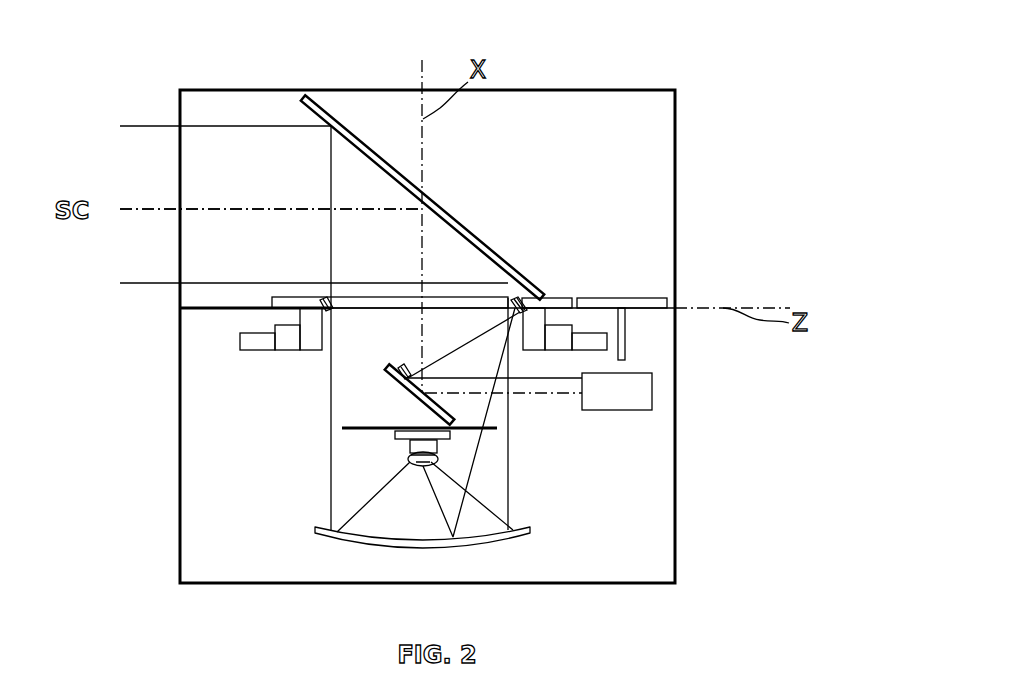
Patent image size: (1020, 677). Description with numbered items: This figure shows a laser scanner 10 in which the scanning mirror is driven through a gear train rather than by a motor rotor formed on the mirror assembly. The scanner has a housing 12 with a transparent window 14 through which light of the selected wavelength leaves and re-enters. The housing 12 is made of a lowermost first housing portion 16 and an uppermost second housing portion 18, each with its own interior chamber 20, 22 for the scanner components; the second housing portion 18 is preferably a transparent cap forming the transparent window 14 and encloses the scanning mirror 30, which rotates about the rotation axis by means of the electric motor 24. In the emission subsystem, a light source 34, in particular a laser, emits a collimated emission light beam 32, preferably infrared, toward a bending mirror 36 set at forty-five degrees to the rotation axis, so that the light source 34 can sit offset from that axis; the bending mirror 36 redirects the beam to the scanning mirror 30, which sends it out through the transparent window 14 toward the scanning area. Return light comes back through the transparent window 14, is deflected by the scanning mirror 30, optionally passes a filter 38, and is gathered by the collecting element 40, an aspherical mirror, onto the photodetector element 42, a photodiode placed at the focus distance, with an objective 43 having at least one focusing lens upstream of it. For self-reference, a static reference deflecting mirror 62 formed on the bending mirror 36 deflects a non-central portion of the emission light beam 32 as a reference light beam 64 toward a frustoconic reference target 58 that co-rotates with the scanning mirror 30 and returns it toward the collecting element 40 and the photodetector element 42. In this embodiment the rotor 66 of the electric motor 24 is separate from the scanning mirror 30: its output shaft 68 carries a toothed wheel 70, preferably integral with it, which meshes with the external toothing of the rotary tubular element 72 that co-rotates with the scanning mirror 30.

The laser scanner 10 is at (151, 79).
The housing 12 is at (704, 277).
The transparent window 14 is at (676, 157).
The first housing portion 16 is at (676, 483).
The second housing portion 18 is at (608, 85).
The interior chamber 20 is at (660, 560).
The interior chamber 22 is at (660, 125).
The electric motor 24 is at (659, 362).
The scanning mirror 30 is at (470, 222).
The emission light beam 32 is at (240, 209).
The light source 34 is at (615, 400).
The bending mirror 36 is at (416, 382).
The filter 38 is at (486, 432).
The collecting element 40 is at (315, 530).
The photodetector element 42 is at (420, 453).
The objective 43 is at (420, 468).
The reference target 58 is at (530, 297).
The static reference deflecting mirror 62 is at (405, 372).
The reference light beam 64 is at (430, 369).
The rotor 66 is at (737, 445).
The output shaft 68 is at (626, 342).
The toothed wheel 70 is at (640, 297).
The rotary tubular element 72 is at (308, 343).